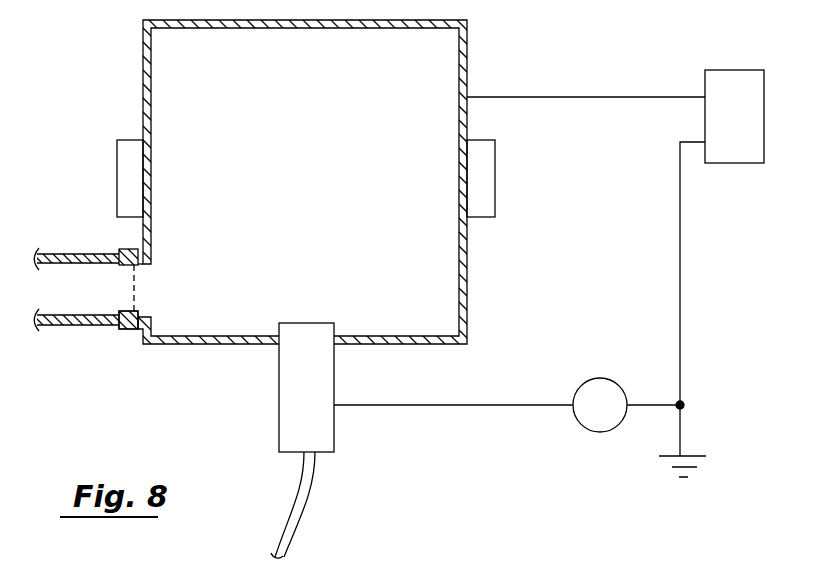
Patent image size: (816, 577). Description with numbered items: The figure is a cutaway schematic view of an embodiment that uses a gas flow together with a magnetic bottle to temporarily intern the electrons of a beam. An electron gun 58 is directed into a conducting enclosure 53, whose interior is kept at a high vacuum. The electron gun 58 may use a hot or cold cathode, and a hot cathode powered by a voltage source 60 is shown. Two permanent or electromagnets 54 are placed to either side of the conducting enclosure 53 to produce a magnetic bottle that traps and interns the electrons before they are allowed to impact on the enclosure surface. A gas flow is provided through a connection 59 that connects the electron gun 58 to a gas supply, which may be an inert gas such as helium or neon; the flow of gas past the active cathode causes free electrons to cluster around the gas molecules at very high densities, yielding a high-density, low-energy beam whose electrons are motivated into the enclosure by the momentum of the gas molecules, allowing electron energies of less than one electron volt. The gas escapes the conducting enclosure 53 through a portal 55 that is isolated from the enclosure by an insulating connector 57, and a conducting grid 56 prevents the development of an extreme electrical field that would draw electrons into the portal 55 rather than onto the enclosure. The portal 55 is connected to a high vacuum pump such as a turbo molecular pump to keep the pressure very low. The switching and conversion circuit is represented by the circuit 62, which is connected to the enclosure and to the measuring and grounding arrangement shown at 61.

The conducting enclosure 53 is at (143, 72).
The magnets 54 is at (117, 161).
The portal 55 is at (72, 299).
The conducting grid 56 is at (134, 280).
The insulating connector 57 is at (125, 330).
The electron gun 58 is at (279, 403).
The connection 59 is at (313, 487).
The voltage source 60 is at (583, 428).
The ground 61 is at (672, 460).
The circuit 62 is at (734, 163).